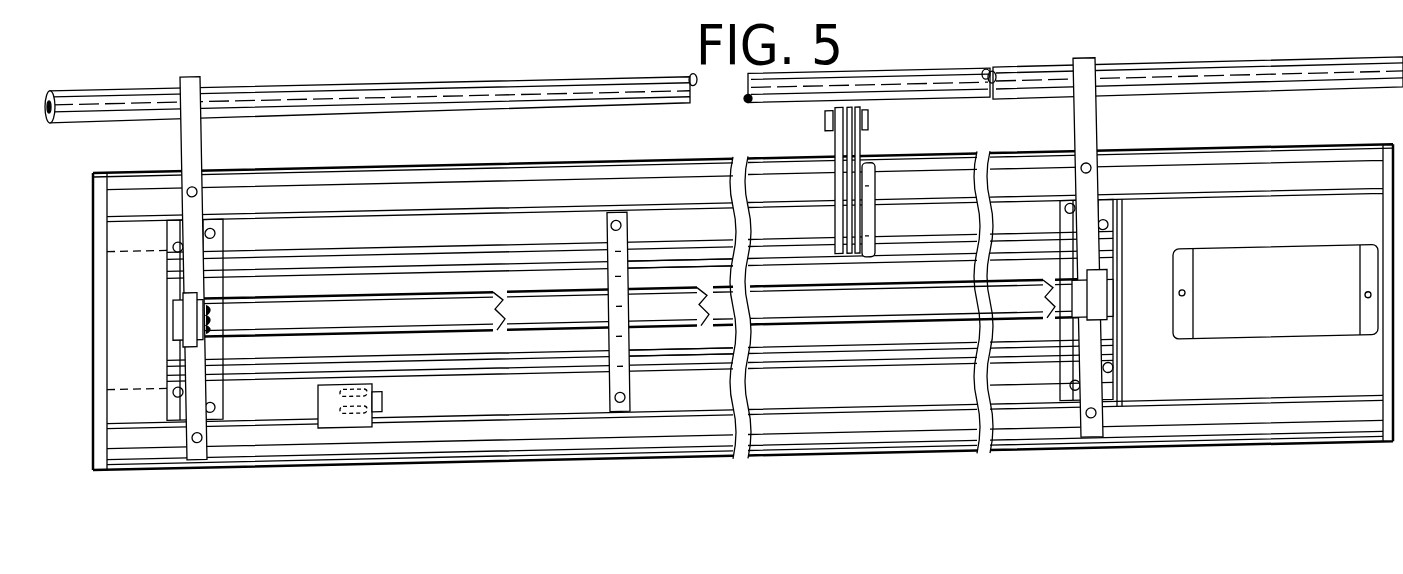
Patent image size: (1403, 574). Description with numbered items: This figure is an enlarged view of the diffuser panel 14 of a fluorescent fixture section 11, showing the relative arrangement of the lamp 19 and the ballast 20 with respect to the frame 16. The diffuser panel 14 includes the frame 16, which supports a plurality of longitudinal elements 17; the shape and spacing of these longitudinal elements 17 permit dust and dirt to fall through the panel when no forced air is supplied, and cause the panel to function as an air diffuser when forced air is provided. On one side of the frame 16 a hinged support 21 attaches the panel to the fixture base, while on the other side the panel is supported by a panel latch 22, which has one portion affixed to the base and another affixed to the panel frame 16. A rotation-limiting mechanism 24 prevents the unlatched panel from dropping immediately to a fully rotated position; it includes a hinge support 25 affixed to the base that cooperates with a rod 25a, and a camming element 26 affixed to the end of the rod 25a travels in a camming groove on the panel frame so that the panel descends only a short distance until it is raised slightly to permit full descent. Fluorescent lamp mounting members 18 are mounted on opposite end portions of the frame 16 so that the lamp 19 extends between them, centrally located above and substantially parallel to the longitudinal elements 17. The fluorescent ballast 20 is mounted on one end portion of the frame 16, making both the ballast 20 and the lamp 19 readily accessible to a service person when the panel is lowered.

The fluorescent fixture section 11 is at (344, 299).
The diffuser panel 14 is at (729, 301).
The frame 16 is at (420, 469).
The longitudinal elements 17 is at (673, 307).
The fluorescent lamp mounting members 18 is at (636, 299).
The lamp 19 is at (645, 308).
The fluorescent ballast 20 is at (1275, 292).
The hinged support 21 is at (724, 242).
The panel latch 22 is at (318, 443).
The rotation-limiting mechanism 24 is at (835, 181).
The hinge support 25 is at (876, 119).
The rod 25a is at (895, 179).
The camming element 26 is at (902, 209).